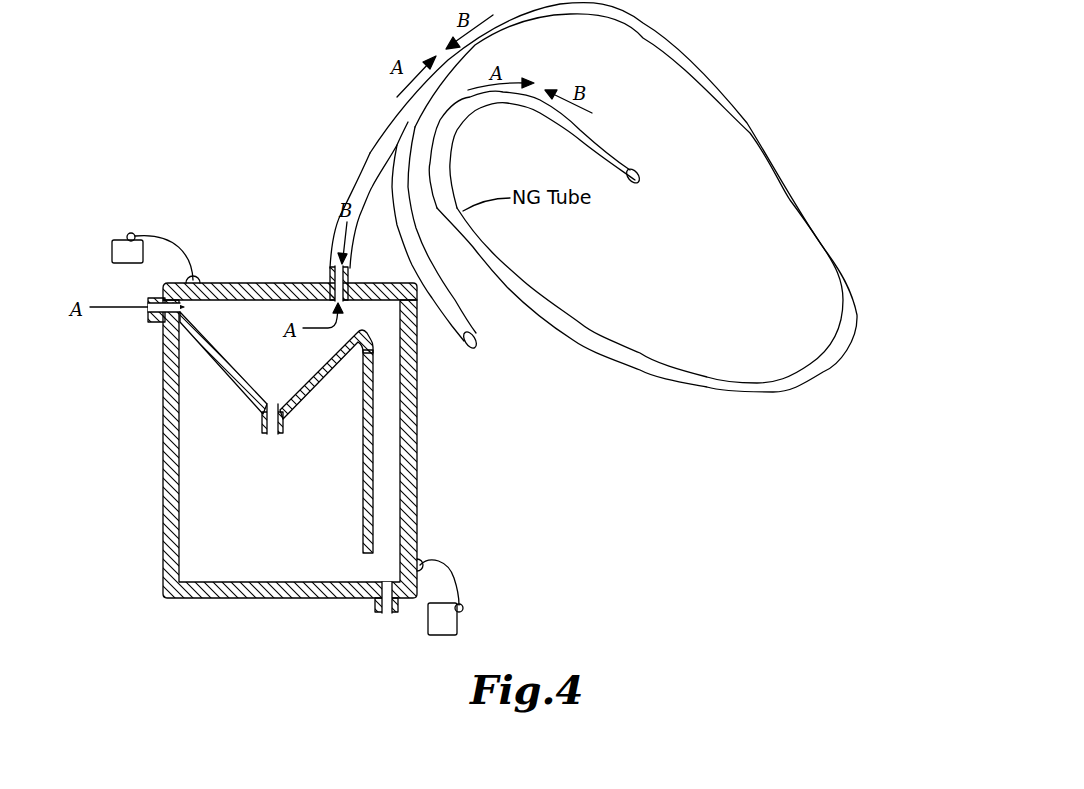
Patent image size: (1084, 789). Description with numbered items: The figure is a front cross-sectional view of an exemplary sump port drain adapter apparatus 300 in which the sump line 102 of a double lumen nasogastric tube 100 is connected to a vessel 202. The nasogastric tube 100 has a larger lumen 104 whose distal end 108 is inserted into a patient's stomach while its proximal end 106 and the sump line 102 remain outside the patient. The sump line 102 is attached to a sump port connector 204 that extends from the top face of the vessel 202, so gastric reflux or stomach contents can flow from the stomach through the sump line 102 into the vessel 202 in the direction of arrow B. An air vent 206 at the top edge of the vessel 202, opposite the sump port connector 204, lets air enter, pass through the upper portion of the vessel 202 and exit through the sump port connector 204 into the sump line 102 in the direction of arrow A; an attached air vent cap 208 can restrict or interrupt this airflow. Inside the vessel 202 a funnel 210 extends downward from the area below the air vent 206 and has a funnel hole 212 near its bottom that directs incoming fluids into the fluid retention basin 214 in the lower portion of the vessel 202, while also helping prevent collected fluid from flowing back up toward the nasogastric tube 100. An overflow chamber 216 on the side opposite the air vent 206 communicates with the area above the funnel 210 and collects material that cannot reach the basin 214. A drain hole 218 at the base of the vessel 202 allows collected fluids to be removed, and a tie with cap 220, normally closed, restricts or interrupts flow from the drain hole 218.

The nasogastric tube 100 is at (726, 68).
The sump line 102 is at (357, 178).
The larger lumen 104 is at (393, 218).
The proximal end 106 is at (478, 347).
The distal end 108 is at (641, 181).
The vessel 202 is at (248, 282).
The sump port connector 204 is at (331, 280).
The air vent 206 is at (157, 323).
The air vent cap 208 is at (112, 250).
The funnel 210 is at (214, 366).
The funnel hole 212 is at (262, 428).
The fluid retention basin 214 is at (247, 552).
The overflow chamber 216 is at (387, 463).
The drain hole 218 is at (385, 614).
The tie with cap 220 is at (445, 628).
The apparatus 300 is at (297, 387).